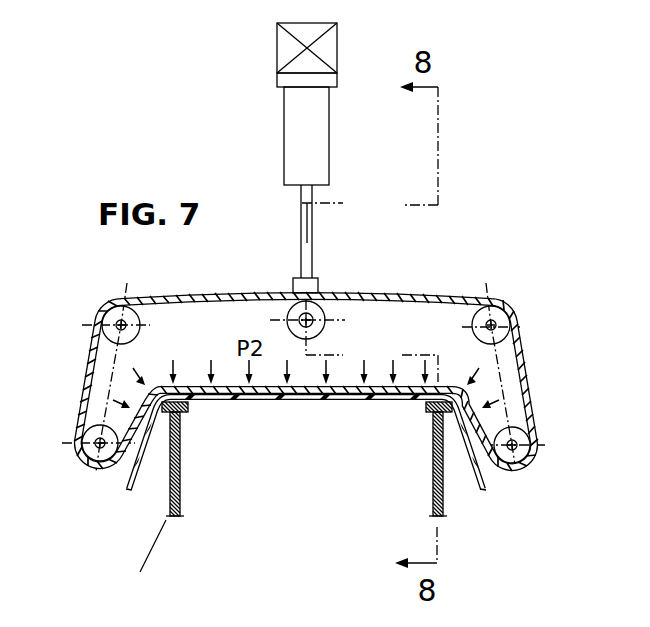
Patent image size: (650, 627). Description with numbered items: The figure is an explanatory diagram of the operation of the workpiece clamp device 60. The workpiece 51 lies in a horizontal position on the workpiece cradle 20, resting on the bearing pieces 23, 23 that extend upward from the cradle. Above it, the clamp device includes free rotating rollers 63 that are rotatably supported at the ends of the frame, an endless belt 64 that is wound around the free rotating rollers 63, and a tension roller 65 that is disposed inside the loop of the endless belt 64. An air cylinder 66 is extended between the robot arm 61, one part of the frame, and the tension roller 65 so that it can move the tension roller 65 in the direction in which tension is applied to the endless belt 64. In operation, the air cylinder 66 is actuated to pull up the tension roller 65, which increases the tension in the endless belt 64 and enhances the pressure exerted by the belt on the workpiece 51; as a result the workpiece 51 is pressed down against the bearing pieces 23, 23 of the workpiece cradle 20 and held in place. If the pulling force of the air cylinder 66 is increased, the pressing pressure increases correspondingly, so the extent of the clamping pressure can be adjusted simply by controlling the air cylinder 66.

The workpiece cradle 20 is at (166, 520).
The bearing pieces 23 is at (180, 468).
The workpiece 51 is at (488, 488).
The workpiece clamp device 60 is at (510, 229).
The robot arm 61 is at (277, 50).
The free rotating rollers 63 is at (110, 312).
The endless belt 64 is at (220, 294).
The tension roller 65 is at (323, 312).
The air cylinder 66 is at (297, 128).